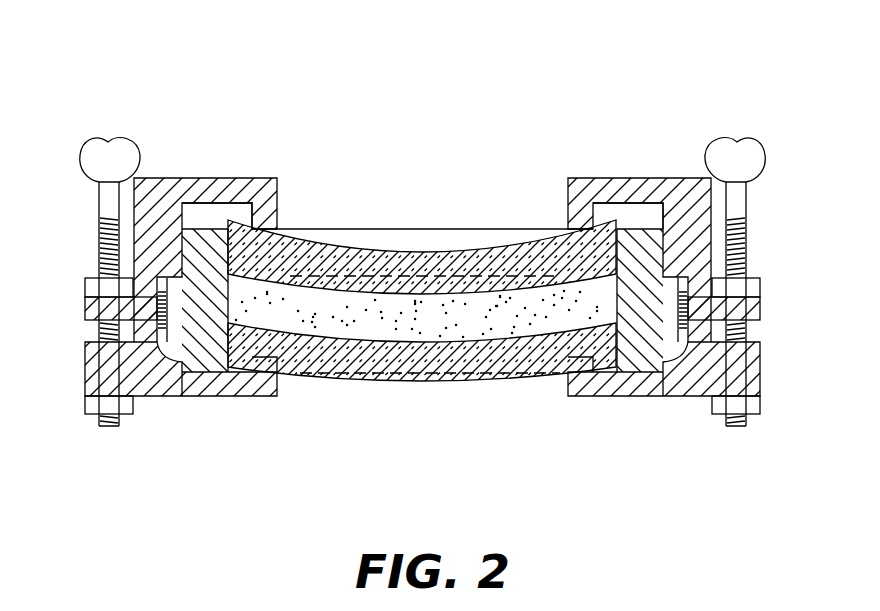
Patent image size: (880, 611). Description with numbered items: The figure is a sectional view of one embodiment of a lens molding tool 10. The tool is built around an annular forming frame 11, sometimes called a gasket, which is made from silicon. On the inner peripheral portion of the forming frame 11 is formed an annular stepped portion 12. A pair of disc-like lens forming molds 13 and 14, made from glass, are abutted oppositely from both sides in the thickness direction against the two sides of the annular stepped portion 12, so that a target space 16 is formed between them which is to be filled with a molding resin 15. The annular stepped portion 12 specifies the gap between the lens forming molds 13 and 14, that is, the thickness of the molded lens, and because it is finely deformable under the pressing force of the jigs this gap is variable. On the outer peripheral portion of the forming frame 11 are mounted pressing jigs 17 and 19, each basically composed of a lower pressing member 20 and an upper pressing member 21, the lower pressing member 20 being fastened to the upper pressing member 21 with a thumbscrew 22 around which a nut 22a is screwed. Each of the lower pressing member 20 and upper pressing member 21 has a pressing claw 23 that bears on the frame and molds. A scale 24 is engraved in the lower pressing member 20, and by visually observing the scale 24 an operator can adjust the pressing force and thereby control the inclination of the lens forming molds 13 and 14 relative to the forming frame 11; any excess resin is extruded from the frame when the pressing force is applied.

The lens molding tool 10 is at (582, 150).
The forming frame 11 is at (203, 332).
The annular stepped portion 12 is at (672, 257).
The lens forming mold 13 is at (434, 258).
The lens forming mold 14 is at (437, 345).
The molding resin 15 is at (367, 318).
The target space 16 is at (503, 317).
The pressing jig 17 is at (190, 170).
The pressing jig 19 is at (682, 165).
The lower pressing member 20 is at (147, 378).
The upper pressing member 21 is at (213, 180).
The thumbscrew 22 is at (118, 145).
The nut 22a is at (84, 278).
The pressing claw 23 is at (277, 210).
The scale 24 is at (160, 363).